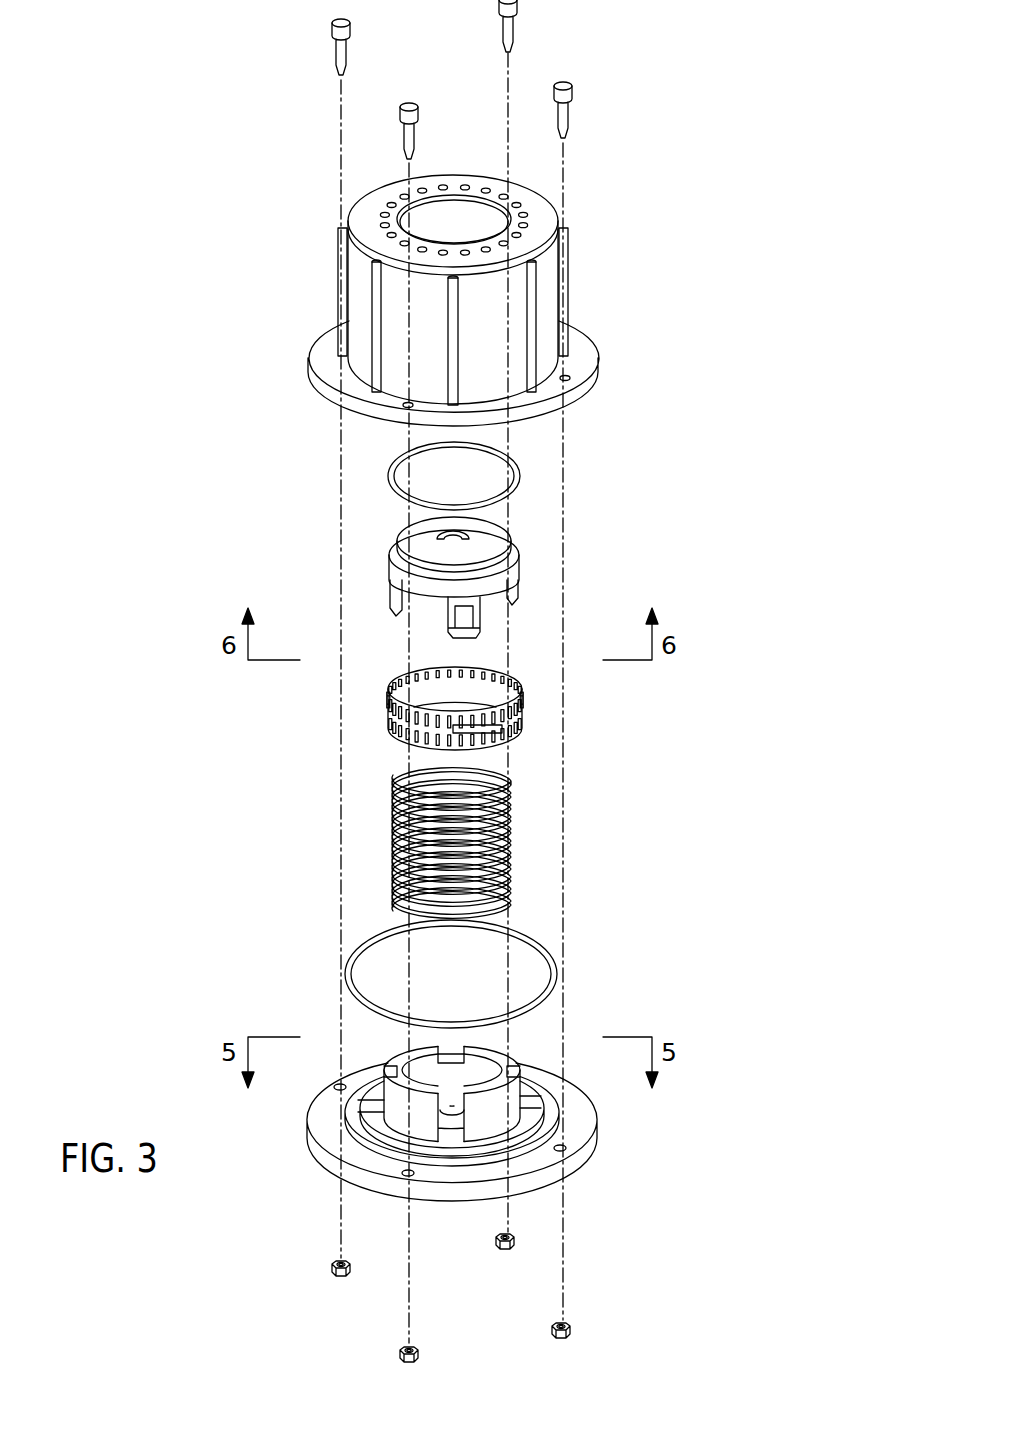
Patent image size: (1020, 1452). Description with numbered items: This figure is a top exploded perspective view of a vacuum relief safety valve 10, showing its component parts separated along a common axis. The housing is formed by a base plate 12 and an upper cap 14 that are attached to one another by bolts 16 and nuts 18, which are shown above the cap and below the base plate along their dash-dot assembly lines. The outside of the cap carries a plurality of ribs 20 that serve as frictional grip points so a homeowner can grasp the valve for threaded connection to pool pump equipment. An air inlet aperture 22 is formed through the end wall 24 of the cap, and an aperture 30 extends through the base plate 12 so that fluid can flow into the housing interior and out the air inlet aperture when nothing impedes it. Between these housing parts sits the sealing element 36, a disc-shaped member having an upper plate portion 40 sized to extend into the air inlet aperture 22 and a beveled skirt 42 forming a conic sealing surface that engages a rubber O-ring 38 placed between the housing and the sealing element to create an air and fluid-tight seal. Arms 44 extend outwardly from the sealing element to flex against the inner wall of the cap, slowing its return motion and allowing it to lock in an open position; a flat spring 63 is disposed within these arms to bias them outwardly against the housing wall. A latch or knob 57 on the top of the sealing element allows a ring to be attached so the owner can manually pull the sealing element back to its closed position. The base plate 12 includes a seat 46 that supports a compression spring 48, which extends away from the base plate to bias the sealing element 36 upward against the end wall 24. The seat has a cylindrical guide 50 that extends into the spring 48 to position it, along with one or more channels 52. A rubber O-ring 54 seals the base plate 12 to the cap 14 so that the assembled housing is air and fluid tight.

The vacuum relief safety valve 10 is at (208, 374).
The base plate 12 is at (312, 1187).
The upper cap 14 is at (310, 258).
The bolts 16 is at (566, 84).
The nuts 18 is at (565, 1321).
The ribs 20 is at (530, 312).
The air inlet aperture 22 is at (460, 215).
The end wall 24 is at (541, 218).
The aperture 30 is at (452, 1128).
The sealing element 36 is at (378, 541).
The O-ring 38 is at (392, 471).
The upper plate portion 40 is at (483, 533).
The beveled skirt 42 is at (517, 556).
The arms 44 is at (393, 601).
The seat 46 is at (504, 1134).
The spring 48 is at (397, 846).
The cylindrical guide 50 is at (508, 1113).
The channels 52 is at (450, 1052).
The O-ring 54 is at (537, 945).
The latch or knob 57 is at (442, 531).
The flat spring 63 is at (521, 708).